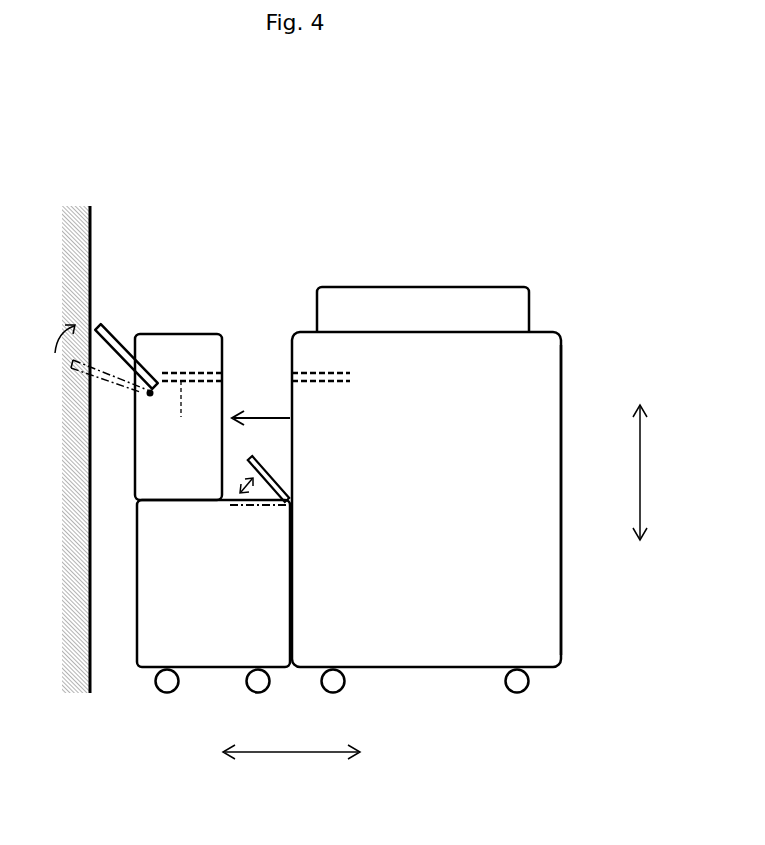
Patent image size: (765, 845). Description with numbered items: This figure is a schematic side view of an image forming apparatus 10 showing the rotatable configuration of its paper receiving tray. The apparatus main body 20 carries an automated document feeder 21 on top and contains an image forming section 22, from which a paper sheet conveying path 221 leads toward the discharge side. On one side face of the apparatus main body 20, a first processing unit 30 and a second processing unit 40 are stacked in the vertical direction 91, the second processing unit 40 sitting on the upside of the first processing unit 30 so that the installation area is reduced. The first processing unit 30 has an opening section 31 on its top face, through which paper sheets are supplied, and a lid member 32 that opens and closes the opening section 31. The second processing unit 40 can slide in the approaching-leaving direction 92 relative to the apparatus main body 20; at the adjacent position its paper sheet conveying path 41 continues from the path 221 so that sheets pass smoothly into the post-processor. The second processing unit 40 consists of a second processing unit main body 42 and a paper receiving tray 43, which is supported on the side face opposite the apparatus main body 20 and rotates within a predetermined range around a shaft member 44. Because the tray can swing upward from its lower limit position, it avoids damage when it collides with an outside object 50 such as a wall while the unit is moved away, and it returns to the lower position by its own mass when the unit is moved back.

The image forming apparatus 10 is at (213, 184).
The apparatus main body 20 is at (578, 298).
The automated document feeder 21 is at (502, 287).
The image forming section 22 is at (573, 373).
The paper sheet conveying path 221 is at (333, 381).
The first processing unit 30 is at (198, 670).
The opening section 31 is at (238, 516).
The lid member 32 is at (270, 468).
The second processing unit 40 is at (201, 317).
The paper sheet conveying path 41 is at (183, 414).
The second processing unit main body 42 is at (162, 333).
The paper receiving tray 43 is at (117, 333).
The shaft member 44 is at (153, 396).
The outside object 50 is at (103, 230).
The vertical direction 91 is at (651, 472).
The approaching-leaving direction 92 is at (291, 740).